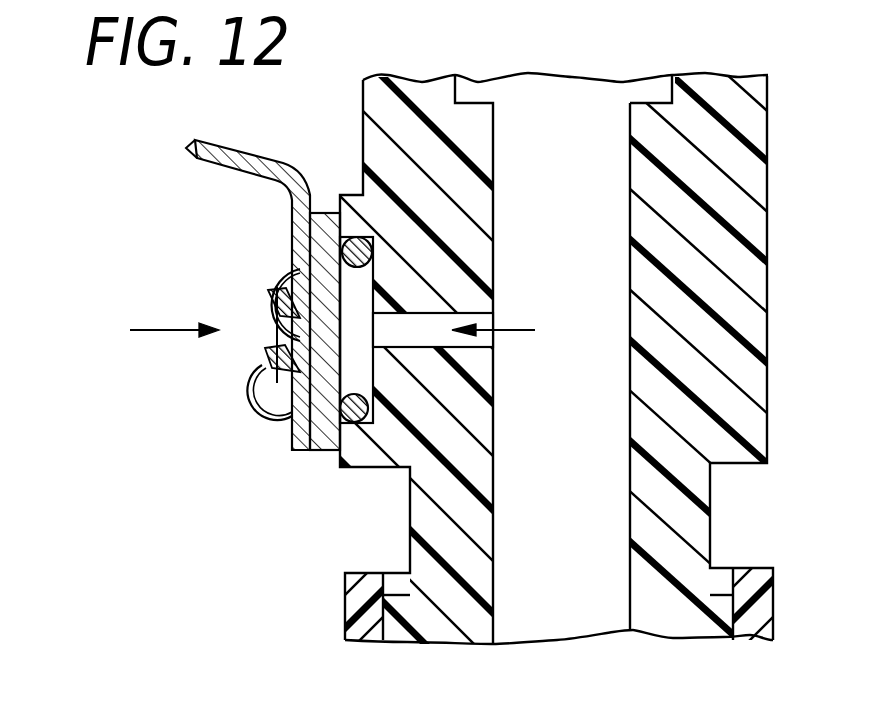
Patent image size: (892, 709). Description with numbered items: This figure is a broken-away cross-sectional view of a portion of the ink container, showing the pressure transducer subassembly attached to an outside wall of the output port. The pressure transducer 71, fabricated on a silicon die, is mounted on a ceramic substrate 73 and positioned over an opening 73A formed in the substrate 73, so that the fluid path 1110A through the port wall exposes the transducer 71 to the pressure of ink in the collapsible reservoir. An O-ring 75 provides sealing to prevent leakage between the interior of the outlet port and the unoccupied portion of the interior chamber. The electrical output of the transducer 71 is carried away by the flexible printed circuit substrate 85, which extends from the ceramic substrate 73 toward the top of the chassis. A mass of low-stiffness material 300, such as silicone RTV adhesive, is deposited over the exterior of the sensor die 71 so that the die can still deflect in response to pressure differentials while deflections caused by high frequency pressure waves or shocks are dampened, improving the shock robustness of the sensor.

The flexible printed circuit substrate 85 is at (254, 156).
The O-ring 75 is at (353, 233).
The mass of low-stiffness material 300 is at (255, 275).
The opening 73A is at (298, 318).
The pressure transducer 71 is at (285, 360).
The ceramic substrate 73 is at (316, 452).
The fluid path 1110A is at (468, 343).